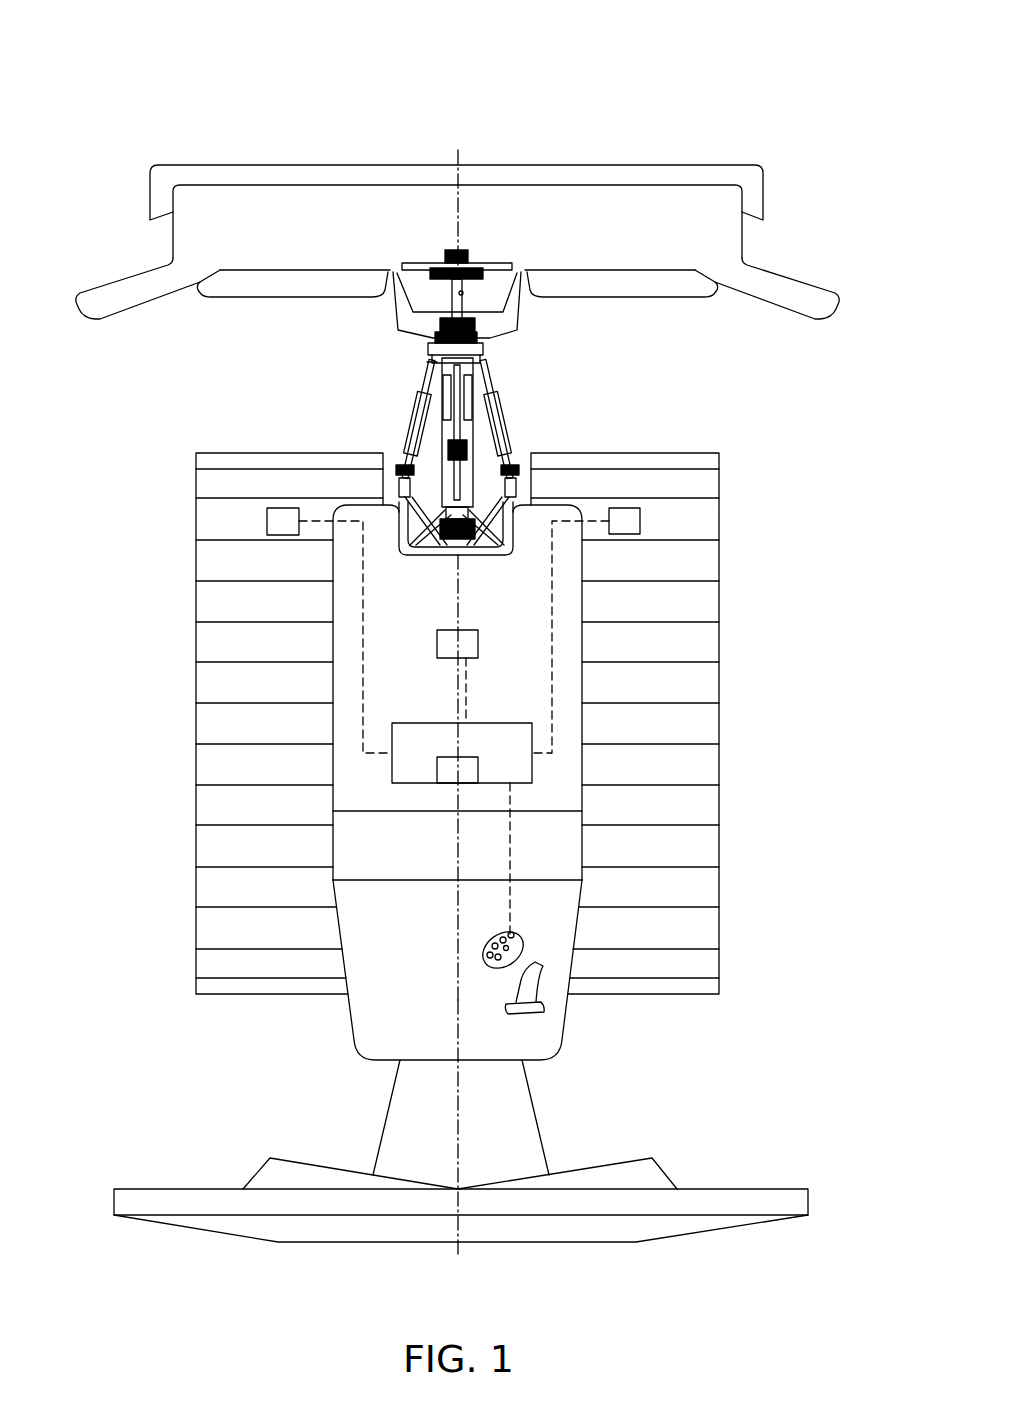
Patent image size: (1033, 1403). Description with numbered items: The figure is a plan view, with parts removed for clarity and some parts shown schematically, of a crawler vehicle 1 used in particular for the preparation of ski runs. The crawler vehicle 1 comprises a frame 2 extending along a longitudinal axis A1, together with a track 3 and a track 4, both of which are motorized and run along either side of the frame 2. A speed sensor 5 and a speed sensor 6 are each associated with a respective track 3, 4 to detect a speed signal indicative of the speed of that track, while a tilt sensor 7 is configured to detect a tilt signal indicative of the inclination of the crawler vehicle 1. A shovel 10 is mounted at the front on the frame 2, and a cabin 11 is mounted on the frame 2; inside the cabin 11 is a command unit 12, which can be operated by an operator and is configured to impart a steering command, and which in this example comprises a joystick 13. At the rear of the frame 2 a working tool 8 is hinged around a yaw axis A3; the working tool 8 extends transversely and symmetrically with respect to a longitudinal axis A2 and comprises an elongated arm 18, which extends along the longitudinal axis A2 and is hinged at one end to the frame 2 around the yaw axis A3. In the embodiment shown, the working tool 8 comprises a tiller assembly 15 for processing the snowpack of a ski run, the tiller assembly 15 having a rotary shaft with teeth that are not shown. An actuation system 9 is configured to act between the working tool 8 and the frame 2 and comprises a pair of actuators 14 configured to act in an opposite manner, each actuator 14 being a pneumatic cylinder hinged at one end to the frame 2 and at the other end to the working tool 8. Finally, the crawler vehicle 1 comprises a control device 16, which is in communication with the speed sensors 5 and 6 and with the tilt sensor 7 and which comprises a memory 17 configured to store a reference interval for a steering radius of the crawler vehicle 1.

The crawler vehicle 1 is at (119, 112).
The frame 2 is at (572, 648).
The track 3 is at (215, 850).
The track 4 is at (700, 850).
The speed sensor 5 is at (268, 522).
The speed sensor 6 is at (640, 525).
The tilt sensor 7 is at (452, 643).
The working tool 8 is at (333, 110).
The actuation system 9 is at (392, 391).
The shovel 10 is at (619, 1218).
The cabin 11 is at (379, 1031).
The command unit 12 is at (535, 1033).
The joystick 13 is at (534, 992).
The actuator 14 is at (410, 445).
The tiller assembly 15 is at (610, 210).
The control device 16 is at (410, 773).
The memory 17 is at (450, 773).
The elongated arm 18 is at (467, 438).
The longitudinal axis A1 is at (450, 1225).
The longitudinal axis A2 is at (465, 155).
The yaw axis A3 is at (467, 558).